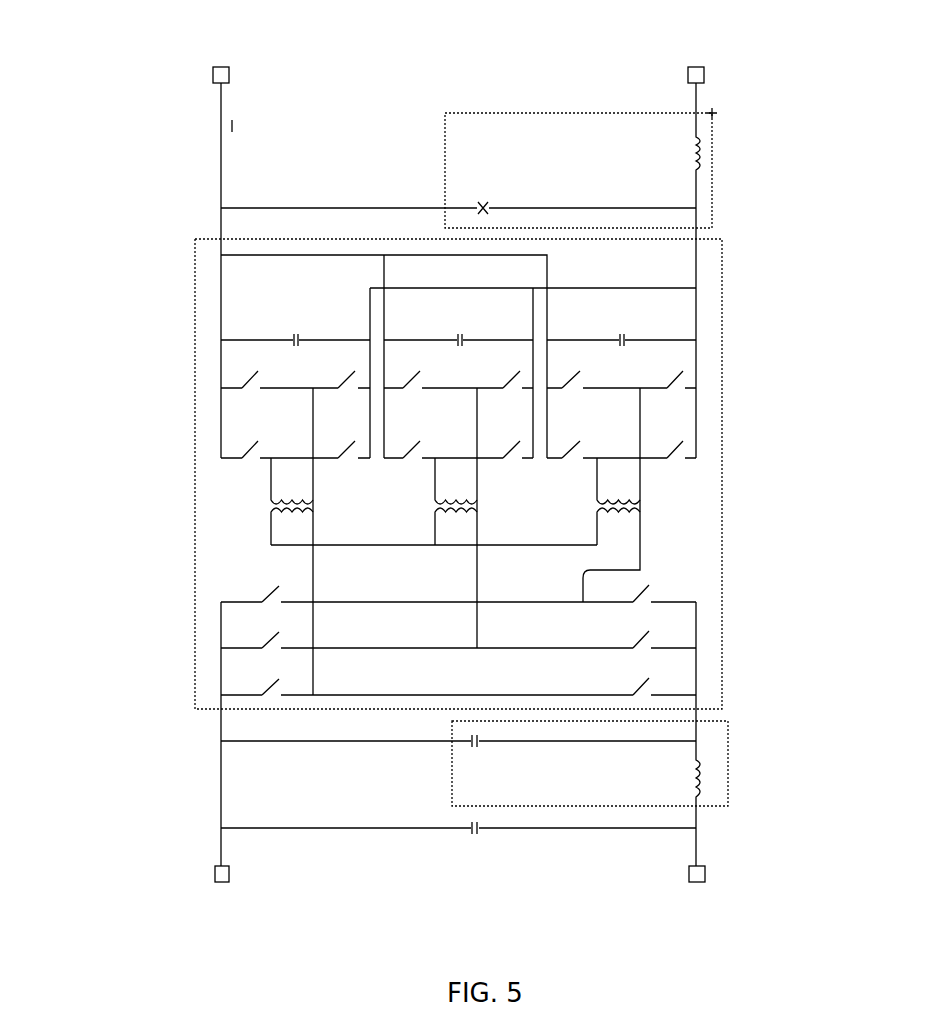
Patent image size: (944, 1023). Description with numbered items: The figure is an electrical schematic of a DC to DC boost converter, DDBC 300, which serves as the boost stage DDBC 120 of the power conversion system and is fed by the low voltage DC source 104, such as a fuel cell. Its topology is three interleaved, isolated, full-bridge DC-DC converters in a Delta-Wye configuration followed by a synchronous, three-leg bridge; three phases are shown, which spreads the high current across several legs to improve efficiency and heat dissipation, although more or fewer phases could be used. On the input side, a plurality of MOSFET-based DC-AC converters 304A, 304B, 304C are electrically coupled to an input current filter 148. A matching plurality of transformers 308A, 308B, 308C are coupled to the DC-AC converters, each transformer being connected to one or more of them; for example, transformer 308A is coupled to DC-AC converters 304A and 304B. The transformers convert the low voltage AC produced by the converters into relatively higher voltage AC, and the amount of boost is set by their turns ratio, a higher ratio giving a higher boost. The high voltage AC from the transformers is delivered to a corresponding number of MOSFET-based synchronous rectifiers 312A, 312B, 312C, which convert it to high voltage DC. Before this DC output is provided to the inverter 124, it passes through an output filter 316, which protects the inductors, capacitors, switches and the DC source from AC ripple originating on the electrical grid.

The DC source 104 is at (178, 85).
The DDBC 120 is at (195, 477).
The inverter 124 is at (170, 882).
The input current filter 148 is at (712, 170).
The DDBC 300 is at (135, 306).
The DC-AC converter 304A is at (338, 240).
The DC-AC converter 304B is at (453, 275).
The DC-AC converter 304C is at (708, 301).
The transformer 308A is at (238, 508).
The transformer 308B is at (420, 512).
The transformer 308C is at (583, 507).
The synchronous rectifier 312A is at (200, 602).
The synchronous rectifier 312B is at (200, 648).
The synchronous rectifier 312C is at (200, 695).
The output filter 316 is at (728, 760).